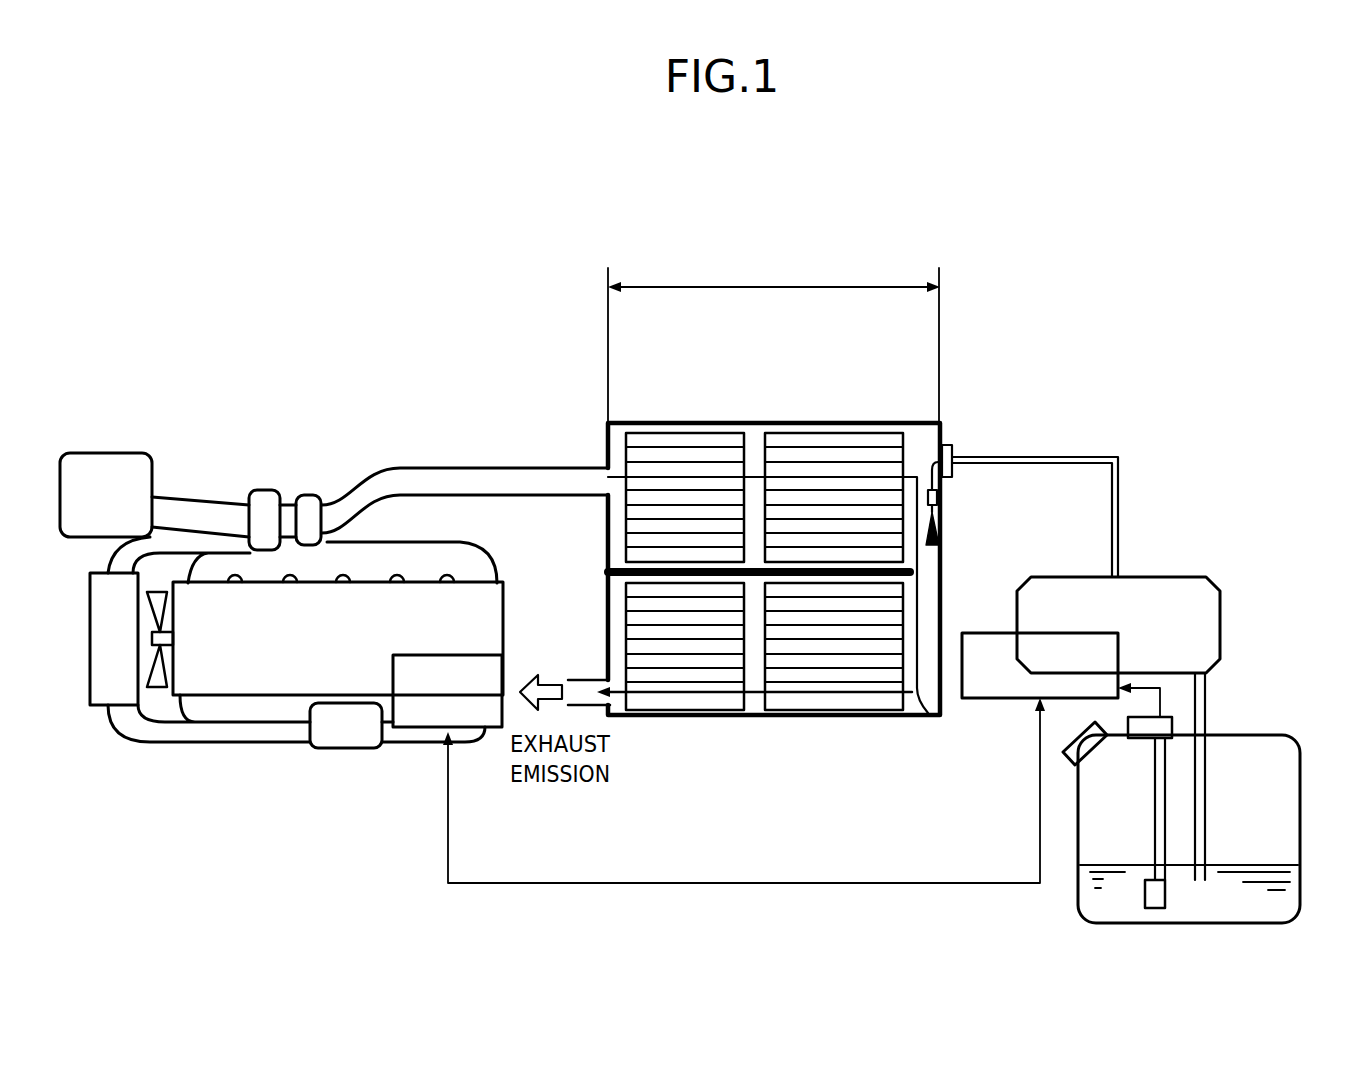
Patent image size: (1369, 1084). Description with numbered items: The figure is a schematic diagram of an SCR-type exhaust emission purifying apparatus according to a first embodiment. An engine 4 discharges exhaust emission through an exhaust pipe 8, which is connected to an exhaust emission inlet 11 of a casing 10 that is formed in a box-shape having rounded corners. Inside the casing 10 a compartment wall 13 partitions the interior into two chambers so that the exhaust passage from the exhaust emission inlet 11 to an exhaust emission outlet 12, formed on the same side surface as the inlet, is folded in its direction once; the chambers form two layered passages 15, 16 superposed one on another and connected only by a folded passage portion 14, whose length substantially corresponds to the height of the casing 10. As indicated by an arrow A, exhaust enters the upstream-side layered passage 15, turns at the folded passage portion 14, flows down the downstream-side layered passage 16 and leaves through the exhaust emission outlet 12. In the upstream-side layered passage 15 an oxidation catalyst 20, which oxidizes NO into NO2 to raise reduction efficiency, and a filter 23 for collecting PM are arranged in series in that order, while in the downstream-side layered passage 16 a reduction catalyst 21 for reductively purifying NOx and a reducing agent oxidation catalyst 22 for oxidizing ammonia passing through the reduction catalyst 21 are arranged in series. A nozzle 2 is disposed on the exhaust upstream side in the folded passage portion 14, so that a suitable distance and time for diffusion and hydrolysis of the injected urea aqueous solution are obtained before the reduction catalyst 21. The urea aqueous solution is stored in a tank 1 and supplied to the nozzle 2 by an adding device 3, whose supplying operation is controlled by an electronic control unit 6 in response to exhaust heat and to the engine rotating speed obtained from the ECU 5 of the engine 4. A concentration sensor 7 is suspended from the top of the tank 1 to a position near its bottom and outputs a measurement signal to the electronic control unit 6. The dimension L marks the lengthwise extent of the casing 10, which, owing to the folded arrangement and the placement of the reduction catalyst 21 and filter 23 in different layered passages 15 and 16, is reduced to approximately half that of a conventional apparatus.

The tank 1 is at (1300, 818).
The nozzle 2 is at (941, 492).
The adding device 3 is at (1215, 580).
The engine 4 is at (250, 672).
The ECU of the engine 5 is at (440, 655).
The electronic control unit (ECU) 6 is at (990, 633).
The concentration sensor 7 is at (1145, 900).
The exhaust pipe 8 is at (488, 468).
The casing 10 is at (895, 422).
The exhaust emission inlet 11 is at (598, 483).
The exhaust emission outlet 12 is at (585, 690).
The compartment wall 13 is at (618, 568).
The folded passage portion 14 is at (948, 557).
The upstream-side layered passage 15 is at (608, 508).
The downstream-side layered passage 16 is at (612, 600).
The oxidation catalyst 20 is at (712, 448).
The reduction catalyst 21 is at (855, 704).
The reducing agent oxidation catalyst 22 is at (718, 704).
The filter 23 is at (851, 448).
The arrow A is at (920, 716).
The casing length L is at (774, 339).